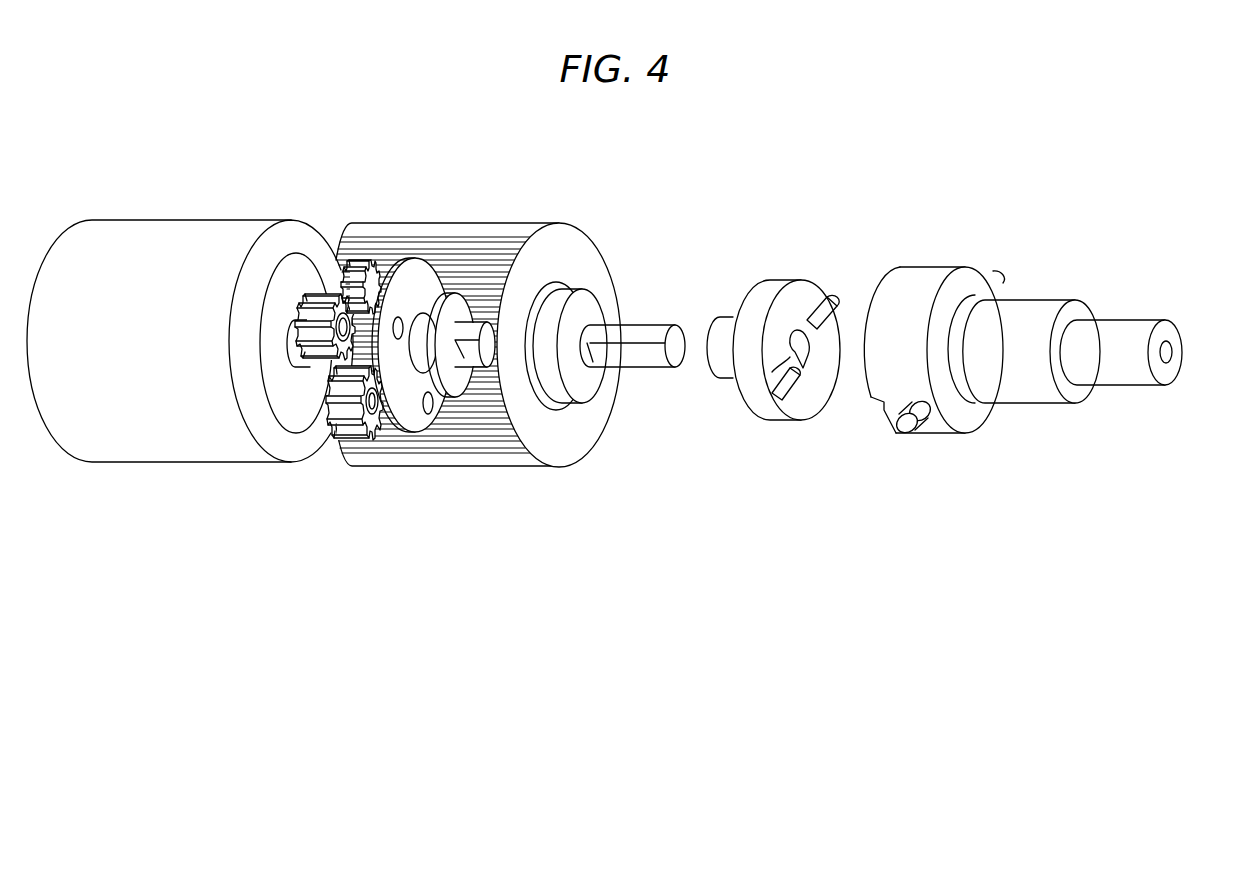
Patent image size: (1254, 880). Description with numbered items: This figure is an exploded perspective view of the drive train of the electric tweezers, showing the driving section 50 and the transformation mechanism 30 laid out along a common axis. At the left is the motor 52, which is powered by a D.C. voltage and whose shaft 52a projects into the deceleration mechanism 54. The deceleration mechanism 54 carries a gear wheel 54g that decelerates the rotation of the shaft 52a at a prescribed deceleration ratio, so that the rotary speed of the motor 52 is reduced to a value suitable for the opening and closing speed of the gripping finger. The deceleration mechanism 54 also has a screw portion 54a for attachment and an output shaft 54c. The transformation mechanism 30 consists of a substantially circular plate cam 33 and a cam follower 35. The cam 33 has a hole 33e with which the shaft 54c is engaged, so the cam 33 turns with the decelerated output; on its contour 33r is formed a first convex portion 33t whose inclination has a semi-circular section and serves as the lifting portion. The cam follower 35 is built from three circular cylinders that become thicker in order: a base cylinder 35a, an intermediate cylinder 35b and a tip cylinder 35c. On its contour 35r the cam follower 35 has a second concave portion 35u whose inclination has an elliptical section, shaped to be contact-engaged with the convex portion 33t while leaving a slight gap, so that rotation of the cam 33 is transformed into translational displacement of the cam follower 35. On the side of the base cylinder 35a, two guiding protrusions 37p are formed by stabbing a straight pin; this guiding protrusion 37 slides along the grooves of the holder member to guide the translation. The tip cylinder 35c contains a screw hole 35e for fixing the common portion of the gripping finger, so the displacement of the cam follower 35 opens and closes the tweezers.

The transformation mechanism 30 is at (772, 346).
The cam 33 is at (772, 361).
The contour 33r is at (772, 372).
The first convex portion 33t is at (772, 400).
The hole 33e is at (800, 372).
The cam follower 35 is at (925, 348).
The contour 35r is at (883, 277).
The base cylinder 35a is at (960, 268).
The second concave portion 35u is at (872, 404).
The intermediate cylinder 35b is at (1038, 300).
The tip cylinder 35c is at (1154, 387).
The screw hole 35e is at (1172, 352).
The guiding protrusion 37 is at (937, 448).
The guiding protrusions 37p is at (910, 428).
The driving section 50 is at (510, 343).
The motor 52 is at (190, 337).
The shaft 52a is at (306, 357).
The deceleration mechanism 54 is at (453, 466).
The screw portion 54a is at (578, 403).
The shaft 54c is at (645, 351).
The gear wheel 54g is at (367, 266).